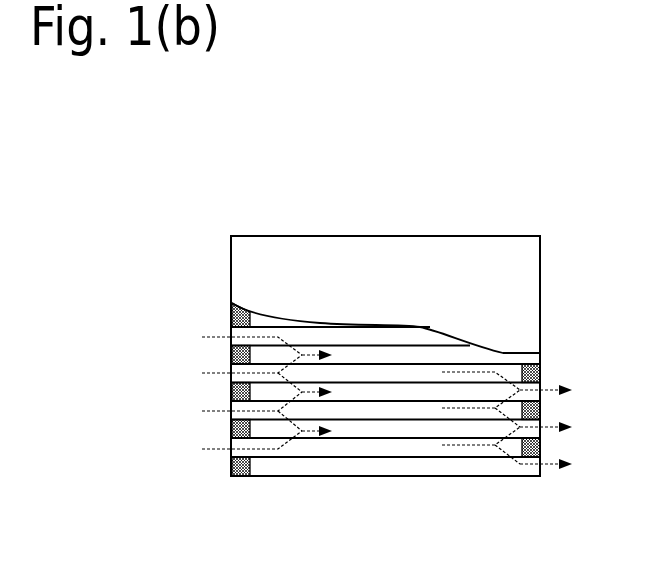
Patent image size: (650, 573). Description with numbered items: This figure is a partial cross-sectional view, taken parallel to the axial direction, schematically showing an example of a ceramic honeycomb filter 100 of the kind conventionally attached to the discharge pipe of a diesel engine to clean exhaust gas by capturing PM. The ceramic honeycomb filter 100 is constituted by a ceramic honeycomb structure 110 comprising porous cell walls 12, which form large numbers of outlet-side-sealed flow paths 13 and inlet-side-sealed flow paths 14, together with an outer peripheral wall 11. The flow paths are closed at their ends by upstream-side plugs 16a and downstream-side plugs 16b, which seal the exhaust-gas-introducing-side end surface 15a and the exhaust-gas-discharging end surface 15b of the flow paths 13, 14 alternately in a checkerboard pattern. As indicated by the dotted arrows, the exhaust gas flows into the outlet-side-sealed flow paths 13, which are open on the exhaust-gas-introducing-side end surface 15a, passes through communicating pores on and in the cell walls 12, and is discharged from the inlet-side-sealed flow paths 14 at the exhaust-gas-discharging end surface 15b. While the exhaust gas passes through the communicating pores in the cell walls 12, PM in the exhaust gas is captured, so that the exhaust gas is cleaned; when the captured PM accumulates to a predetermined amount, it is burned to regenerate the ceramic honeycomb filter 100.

The ceramic honeycomb filter 100 is at (270, 192).
The ceramic honeycomb structure 110 is at (362, 236).
The outer peripheral wall 11 is at (281, 478).
The porous cell walls 12 is at (333, 460).
The outlet-side-sealed flow paths 13 is at (425, 447).
The inlet-side-sealed flow paths 14 is at (373, 428).
The exhaust-gas-introducing-side end surface 15a is at (232, 466).
The exhaust-gas-discharging end surface 15b is at (543, 471).
The upstream-side plugs 16a is at (235, 430).
The downstream-side plugs 16b is at (542, 450).